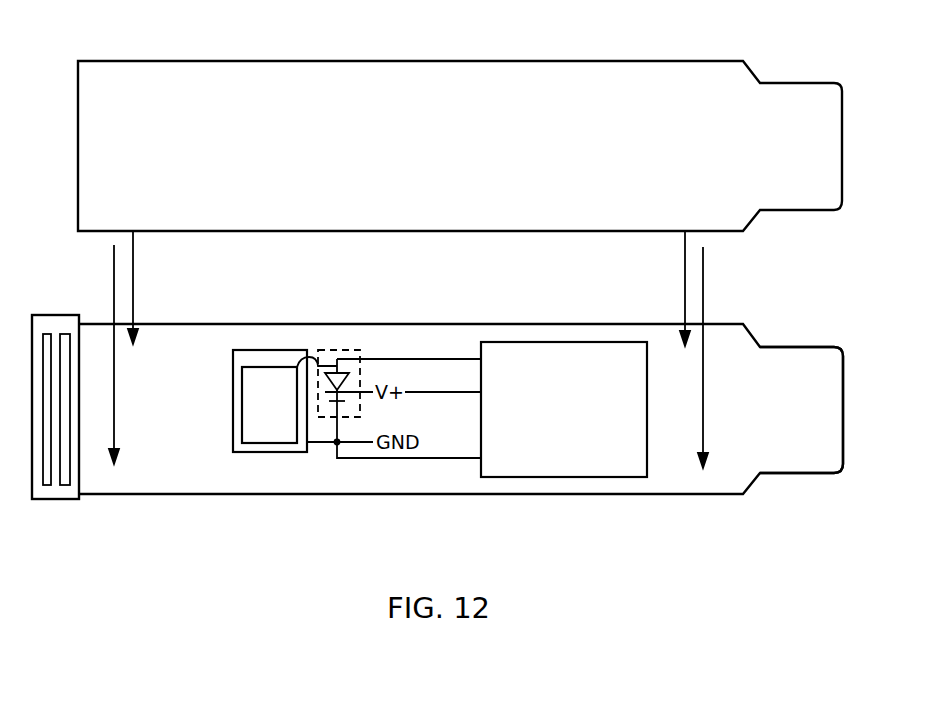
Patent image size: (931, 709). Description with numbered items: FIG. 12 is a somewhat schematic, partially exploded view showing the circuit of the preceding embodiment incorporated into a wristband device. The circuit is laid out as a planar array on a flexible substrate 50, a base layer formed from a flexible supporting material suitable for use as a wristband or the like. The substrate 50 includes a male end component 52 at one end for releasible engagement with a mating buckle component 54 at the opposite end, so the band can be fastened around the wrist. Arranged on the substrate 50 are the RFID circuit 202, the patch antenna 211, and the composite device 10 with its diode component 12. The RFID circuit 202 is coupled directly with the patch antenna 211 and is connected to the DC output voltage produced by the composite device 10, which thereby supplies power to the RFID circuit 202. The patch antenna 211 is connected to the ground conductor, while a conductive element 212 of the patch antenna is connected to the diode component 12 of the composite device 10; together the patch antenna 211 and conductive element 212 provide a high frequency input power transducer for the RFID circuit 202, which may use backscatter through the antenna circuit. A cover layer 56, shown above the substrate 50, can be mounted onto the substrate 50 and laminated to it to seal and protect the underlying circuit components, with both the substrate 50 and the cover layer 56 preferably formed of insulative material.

The composite device 10 is at (337, 351).
The diode component 12 is at (333, 360).
The flexible substrate 50 is at (208, 328).
The male end component 52 is at (792, 356).
The buckle component 54 is at (63, 320).
The cover layer 56 is at (397, 73).
The RFID circuit 202 is at (558, 463).
The patch antenna 211 is at (297, 452).
The conductive element 212 is at (265, 435).